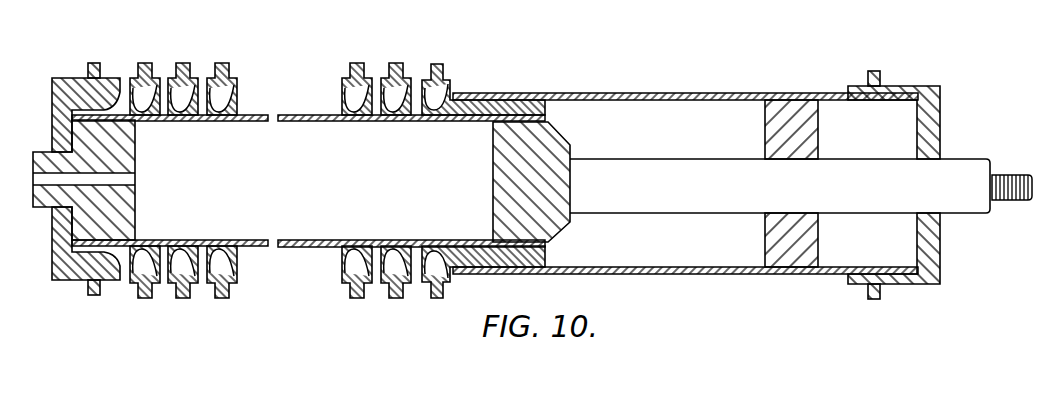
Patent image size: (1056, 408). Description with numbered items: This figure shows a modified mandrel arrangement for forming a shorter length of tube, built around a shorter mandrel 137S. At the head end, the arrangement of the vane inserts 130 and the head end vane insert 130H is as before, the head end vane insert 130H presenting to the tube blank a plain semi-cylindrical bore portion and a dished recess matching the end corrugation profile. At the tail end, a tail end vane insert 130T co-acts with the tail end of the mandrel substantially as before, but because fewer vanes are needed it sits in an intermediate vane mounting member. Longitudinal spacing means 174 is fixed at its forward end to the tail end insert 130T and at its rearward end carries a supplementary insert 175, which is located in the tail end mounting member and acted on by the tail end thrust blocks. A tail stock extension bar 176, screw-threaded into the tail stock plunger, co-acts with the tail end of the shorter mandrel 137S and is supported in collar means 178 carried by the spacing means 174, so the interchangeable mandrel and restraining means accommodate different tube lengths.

The head end vane insert 130H is at (68, 92).
The vane inserts 130 is at (222, 71).
The shorter mandrel 137S is at (312, 110).
The tail end vane insert 130T is at (443, 77).
The longitudinal spacing means 174 is at (527, 88).
The collar means 178 is at (788, 123).
The supplementary insert 175 is at (932, 93).
The tail stock extension bar 176 is at (958, 187).